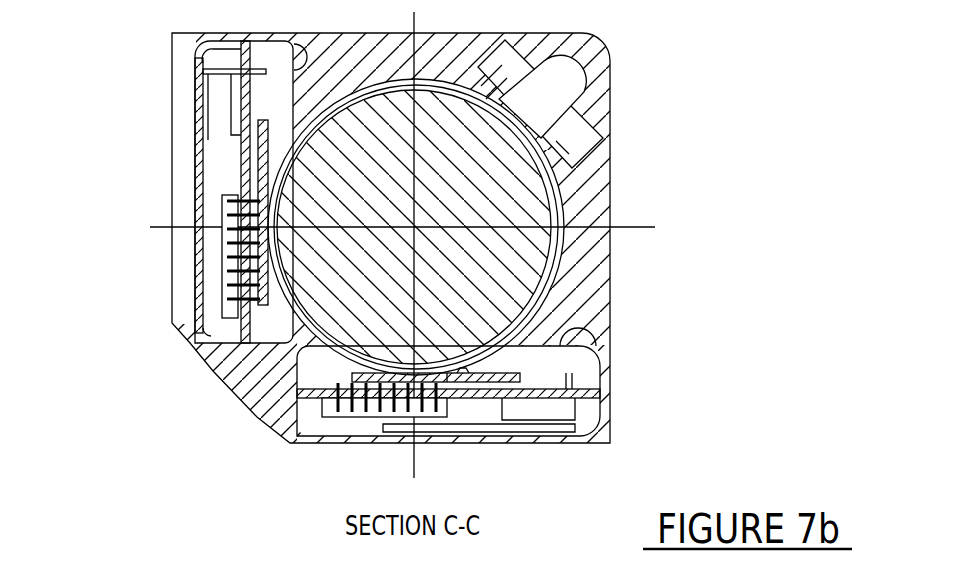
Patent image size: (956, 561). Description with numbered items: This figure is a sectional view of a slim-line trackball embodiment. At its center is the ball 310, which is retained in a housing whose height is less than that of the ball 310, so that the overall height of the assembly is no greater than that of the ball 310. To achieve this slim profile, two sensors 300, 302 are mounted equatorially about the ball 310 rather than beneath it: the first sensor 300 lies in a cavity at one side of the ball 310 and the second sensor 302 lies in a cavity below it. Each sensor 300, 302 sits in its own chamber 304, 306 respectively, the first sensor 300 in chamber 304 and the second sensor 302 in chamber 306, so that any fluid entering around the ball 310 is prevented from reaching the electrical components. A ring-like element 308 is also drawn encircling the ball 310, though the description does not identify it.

The sensor 300 is at (144, 258).
The sensor 302 is at (413, 390).
The chamber 304 is at (268, 332).
The chamber 306 is at (582, 362).
The ring seal 308 is at (545, 265).
The ball 310 is at (538, 192).